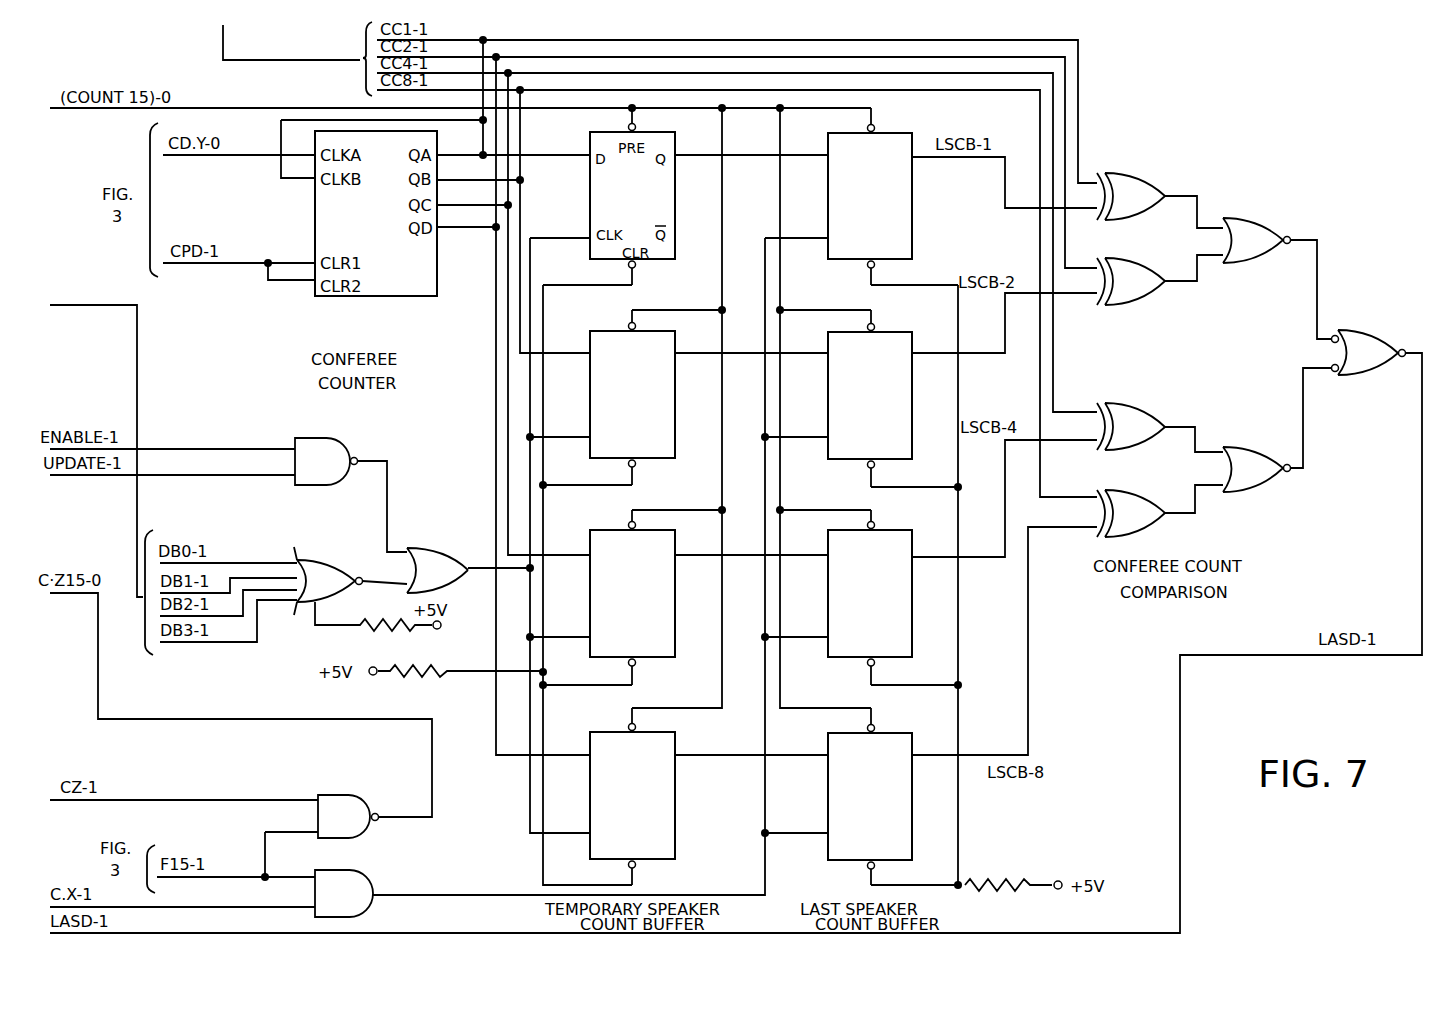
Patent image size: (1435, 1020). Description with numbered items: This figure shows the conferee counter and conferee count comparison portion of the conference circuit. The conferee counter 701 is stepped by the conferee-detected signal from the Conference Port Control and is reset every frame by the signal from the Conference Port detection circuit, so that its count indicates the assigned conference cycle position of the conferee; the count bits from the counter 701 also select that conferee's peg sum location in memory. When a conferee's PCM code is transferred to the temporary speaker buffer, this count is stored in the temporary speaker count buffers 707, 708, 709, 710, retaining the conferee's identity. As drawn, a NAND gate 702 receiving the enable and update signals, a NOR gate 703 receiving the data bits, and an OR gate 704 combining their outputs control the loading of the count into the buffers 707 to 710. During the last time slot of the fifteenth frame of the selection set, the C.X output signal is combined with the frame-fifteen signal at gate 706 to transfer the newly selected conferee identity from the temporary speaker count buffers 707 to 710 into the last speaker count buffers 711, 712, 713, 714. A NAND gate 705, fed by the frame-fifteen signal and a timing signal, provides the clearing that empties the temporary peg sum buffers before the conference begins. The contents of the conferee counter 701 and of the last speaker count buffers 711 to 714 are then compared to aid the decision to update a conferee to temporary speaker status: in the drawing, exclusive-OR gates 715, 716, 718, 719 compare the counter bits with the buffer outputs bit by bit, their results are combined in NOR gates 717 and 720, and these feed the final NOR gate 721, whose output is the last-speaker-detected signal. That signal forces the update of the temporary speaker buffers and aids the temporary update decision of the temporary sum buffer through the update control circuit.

The conferee counter 701 is at (388, 298).
The NAND gate 702 is at (339, 441).
The NOR gate 703 is at (324, 549).
The OR gate 704 is at (425, 548).
The NAND gate 705 is at (350, 795).
The gate 706 is at (347, 870).
The temporary speaker counter buffer 707 is at (660, 262).
The temporary speaker counter buffer 708 is at (645, 466).
The temporary speaker counter buffer 709 is at (645, 665).
The temporary speaker counter buffer 710 is at (648, 865).
The last speaker count buffer 711 is at (895, 262).
The last speaker count buffer 712 is at (893, 466).
The last speaker count buffer 713 is at (893, 664).
The last speaker count buffer 714 is at (890, 866).
The exclusive-OR gate 715 is at (1137, 173).
The exclusive-OR gate 716 is at (1150, 249).
The NOR gate 717 is at (1253, 218).
The exclusive-OR gate 718 is at (1137, 403).
The exclusive-OR gate 719 is at (1130, 490).
The NOR gate 720 is at (1250, 447).
The gate 721 is at (1365, 330).